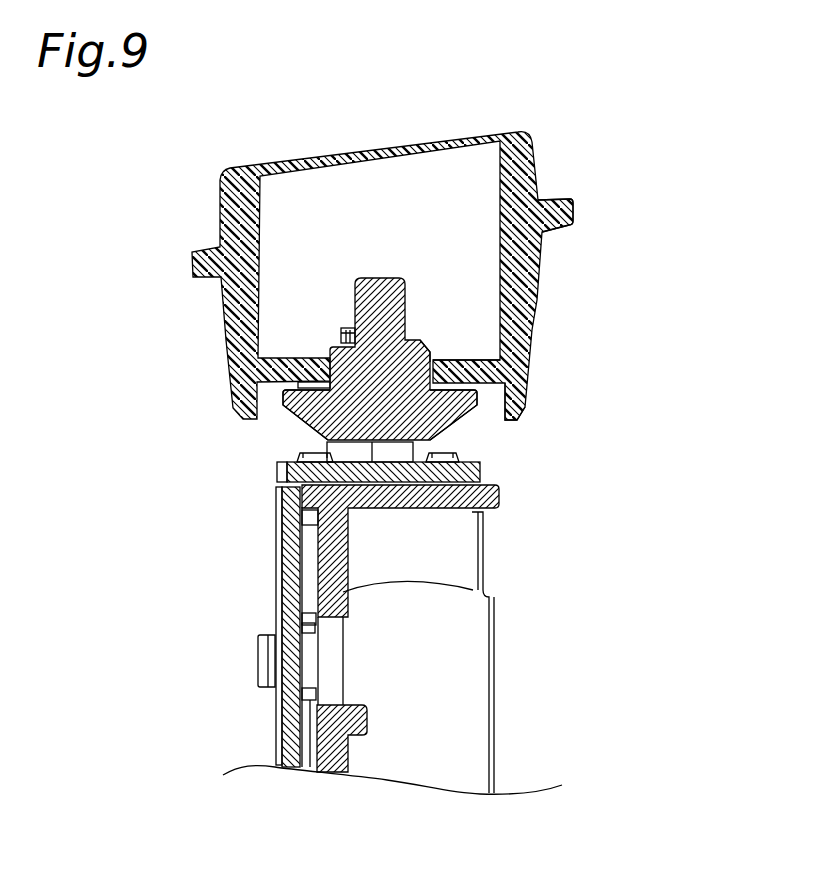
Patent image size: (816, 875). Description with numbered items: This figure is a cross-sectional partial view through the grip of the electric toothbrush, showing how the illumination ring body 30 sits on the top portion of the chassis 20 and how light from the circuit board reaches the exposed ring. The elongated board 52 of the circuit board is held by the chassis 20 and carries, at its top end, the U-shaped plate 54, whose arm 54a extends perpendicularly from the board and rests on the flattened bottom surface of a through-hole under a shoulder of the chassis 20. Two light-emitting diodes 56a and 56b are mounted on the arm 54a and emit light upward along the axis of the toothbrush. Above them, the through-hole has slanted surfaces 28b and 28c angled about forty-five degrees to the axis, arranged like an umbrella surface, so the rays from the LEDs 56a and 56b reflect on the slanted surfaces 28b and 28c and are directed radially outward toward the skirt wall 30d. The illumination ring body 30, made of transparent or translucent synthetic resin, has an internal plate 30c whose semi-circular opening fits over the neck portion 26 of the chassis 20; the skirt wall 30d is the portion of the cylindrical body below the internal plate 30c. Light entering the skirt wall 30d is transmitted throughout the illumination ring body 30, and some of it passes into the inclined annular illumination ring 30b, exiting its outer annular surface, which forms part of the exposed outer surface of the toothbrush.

The chassis 20 is at (489, 593).
The neck portion 26 is at (423, 357).
The slanted surface 28b is at (325, 436).
The slanted surface 28c is at (455, 425).
The illumination ring body 30 is at (532, 156).
The illumination ring 30b is at (567, 217).
The internal plate 30c is at (480, 360).
The skirt wall 30d is at (528, 388).
The elongated board 52 is at (290, 537).
The U-shaped plate 54 is at (279, 474).
The arm 54a is at (499, 488).
The light-emitting diode 56a is at (299, 456).
The light-emitting diode 56b is at (460, 456).